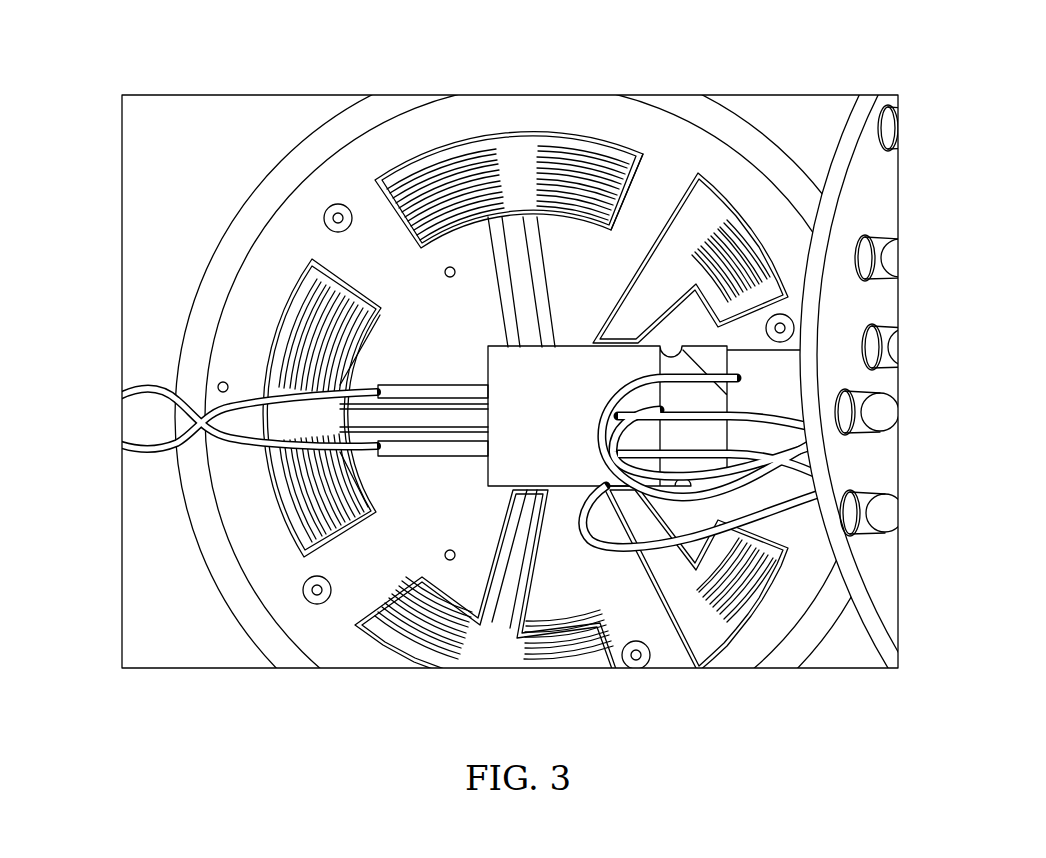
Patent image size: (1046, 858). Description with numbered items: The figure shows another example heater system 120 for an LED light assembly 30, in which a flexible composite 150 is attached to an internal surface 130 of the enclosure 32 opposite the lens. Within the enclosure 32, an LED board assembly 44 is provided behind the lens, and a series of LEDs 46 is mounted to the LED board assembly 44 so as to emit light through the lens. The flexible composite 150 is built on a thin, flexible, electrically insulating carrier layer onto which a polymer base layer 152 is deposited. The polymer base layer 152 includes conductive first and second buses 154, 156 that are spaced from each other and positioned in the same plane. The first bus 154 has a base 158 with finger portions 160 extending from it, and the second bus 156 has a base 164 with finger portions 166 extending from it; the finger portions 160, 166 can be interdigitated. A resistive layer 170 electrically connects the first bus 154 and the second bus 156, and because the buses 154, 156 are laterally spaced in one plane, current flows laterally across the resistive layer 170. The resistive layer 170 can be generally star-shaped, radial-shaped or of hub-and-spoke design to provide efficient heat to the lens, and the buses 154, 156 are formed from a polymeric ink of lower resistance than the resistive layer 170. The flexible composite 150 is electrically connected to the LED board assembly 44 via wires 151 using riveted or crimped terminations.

The LED light assembly 30 is at (222, 636).
The enclosure 32 is at (218, 287).
The LED board assembly 44 is at (845, 150).
The LEDs 46 is at (880, 412).
The heater system 120 is at (255, 495).
The internal surface 130 is at (288, 213).
The flexible composite 150 is at (460, 180).
The wires 151 is at (715, 530).
The polymer base layer 152 is at (378, 178).
The first bus 154 is at (437, 157).
The second bus 156 is at (525, 255).
The base 158 is at (632, 183).
The finger portions 160 is at (598, 155).
The base 164 is at (505, 160).
The finger portions 166 is at (573, 167).
The resistive layer 170 is at (462, 150).